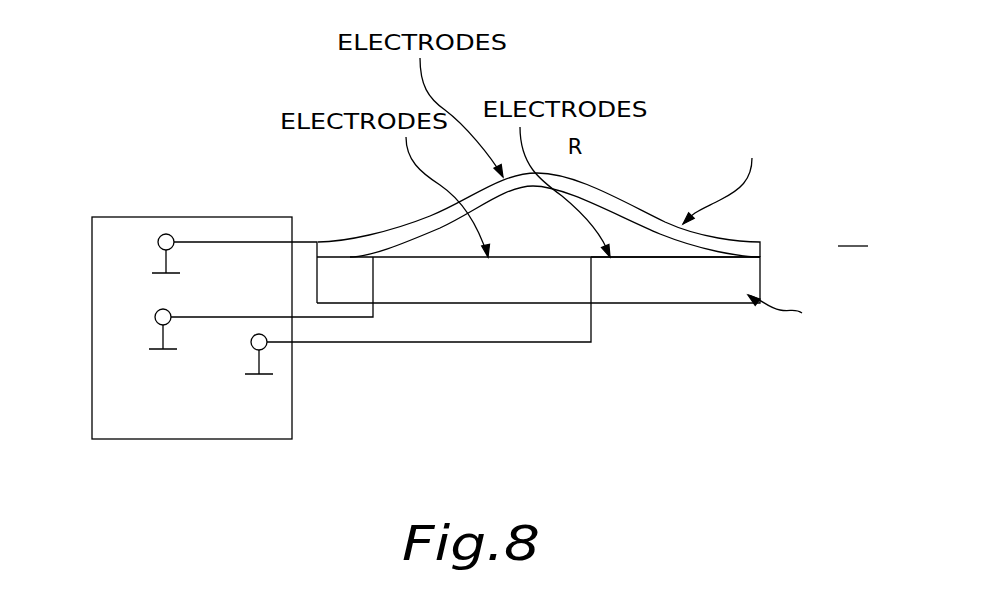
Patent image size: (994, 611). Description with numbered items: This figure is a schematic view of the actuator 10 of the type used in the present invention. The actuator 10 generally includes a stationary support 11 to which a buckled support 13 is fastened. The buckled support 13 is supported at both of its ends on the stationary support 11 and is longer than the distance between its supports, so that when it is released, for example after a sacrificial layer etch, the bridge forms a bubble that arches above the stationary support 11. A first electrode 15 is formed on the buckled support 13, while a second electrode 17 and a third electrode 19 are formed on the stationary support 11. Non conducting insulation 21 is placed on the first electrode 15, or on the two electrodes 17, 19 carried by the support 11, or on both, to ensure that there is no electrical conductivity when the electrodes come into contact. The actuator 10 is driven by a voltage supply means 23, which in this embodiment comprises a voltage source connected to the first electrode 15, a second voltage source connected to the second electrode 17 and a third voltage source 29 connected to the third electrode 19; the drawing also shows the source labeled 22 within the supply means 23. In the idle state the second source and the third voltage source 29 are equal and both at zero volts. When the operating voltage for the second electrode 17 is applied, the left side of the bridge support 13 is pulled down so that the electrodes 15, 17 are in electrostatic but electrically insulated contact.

The actuator 10 is at (853, 233).
The stationary support 11 is at (740, 293).
The buckled support 13 is at (615, 215).
The first electrode 15 is at (382, 232).
The second electrode 17 is at (460, 257).
The third electrode 19 is at (677, 257).
The non conducting insulation 21 is at (160, 274).
The voltage source V1 22 is at (160, 353).
The voltage supply means 23 is at (227, 217).
The third voltage source 29 is at (258, 382).